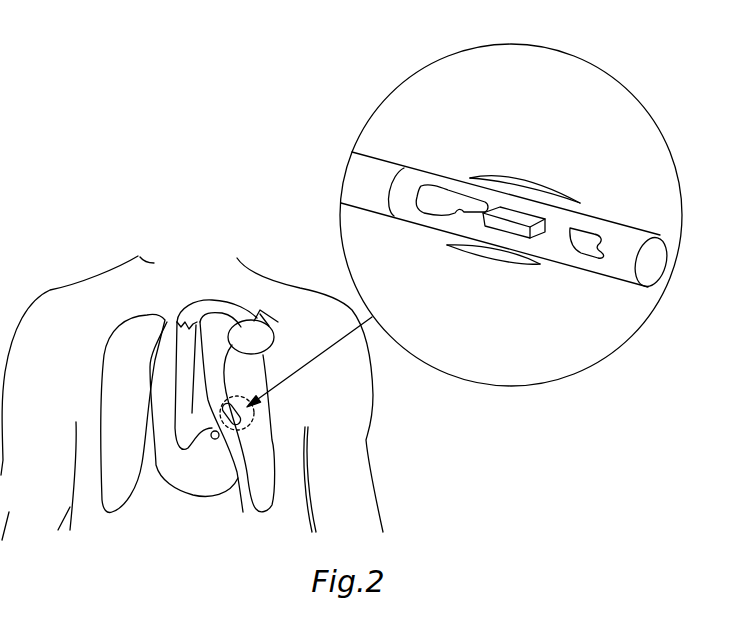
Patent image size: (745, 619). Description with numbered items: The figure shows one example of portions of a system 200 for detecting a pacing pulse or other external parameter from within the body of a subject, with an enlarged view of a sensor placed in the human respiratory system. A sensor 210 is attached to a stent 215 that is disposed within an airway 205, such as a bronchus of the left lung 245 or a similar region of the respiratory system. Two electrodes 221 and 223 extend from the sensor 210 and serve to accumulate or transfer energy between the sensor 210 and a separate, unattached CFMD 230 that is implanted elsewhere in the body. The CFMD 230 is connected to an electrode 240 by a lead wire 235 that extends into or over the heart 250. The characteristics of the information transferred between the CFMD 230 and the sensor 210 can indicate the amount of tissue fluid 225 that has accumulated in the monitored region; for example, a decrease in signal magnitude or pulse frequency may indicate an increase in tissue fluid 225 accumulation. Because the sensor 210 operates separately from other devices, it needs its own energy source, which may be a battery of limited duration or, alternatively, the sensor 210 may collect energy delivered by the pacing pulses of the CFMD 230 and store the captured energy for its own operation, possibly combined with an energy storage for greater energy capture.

The system 200 is at (124, 167).
The airway 205 is at (376, 158).
The sensor 210 is at (513, 233).
The stent 215 is at (600, 219).
The electrode 221 is at (443, 190).
The electrode 223 is at (591, 237).
The tissue fluid 225 is at (538, 179).
The CFMD 230 is at (275, 336).
The lead wire 235 is at (207, 299).
The electrode 240 is at (213, 440).
The left lung 245 is at (262, 508).
The heart 250 is at (220, 497).